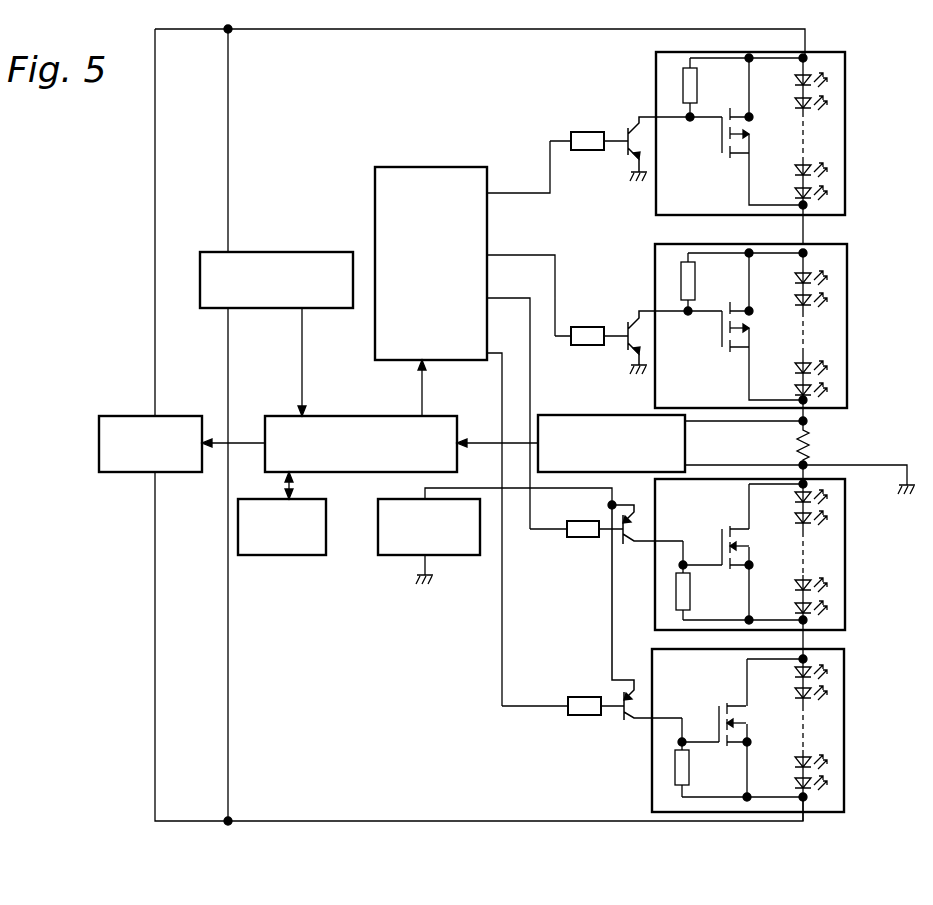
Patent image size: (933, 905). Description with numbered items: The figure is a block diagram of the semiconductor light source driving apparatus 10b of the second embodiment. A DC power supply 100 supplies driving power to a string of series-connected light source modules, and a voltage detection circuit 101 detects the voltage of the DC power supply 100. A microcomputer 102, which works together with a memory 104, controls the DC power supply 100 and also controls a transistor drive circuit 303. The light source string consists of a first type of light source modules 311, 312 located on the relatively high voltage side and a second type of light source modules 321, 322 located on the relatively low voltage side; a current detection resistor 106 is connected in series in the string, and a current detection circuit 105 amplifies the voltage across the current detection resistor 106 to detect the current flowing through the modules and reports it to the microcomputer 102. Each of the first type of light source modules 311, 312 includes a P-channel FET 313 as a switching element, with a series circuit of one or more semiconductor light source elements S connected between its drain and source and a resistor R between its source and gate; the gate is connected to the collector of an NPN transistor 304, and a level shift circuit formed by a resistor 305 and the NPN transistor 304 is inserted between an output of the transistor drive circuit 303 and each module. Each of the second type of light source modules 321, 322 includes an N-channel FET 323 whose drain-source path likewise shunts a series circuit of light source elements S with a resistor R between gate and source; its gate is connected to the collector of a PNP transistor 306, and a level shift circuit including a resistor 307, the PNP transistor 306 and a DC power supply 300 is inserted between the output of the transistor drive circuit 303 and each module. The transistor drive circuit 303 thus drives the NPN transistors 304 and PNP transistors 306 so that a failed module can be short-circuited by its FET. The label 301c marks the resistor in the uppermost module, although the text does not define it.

The semiconductor light source driving apparatus 10b is at (92, 587).
The DC power supply 100 is at (167, 415).
The voltage detection circuit 101 is at (268, 250).
The microcomputer 102 is at (330, 415).
The memory 104 is at (327, 537).
The current detection circuit 105 is at (685, 453).
The current detection resistor 106 is at (810, 447).
The DC power supply 300 is at (448, 497).
The resistor 301c is at (683, 91).
The transistor drive circuit 303 is at (427, 165).
The NPN transistor 304 is at (630, 128).
The resistor 305 is at (571, 131).
The PNP transistor 306 is at (628, 547).
The resistor 307 is at (575, 538).
The first type of light source module 311 is at (845, 138).
The first type of light source module 312 is at (847, 332).
The P-channel FET 313 is at (715, 147).
The second type of light source module 321 is at (845, 587).
The second type of light source module 322 is at (845, 730).
The N-channel FET 323 is at (710, 540).
The semiconductor light source element S is at (833, 83).